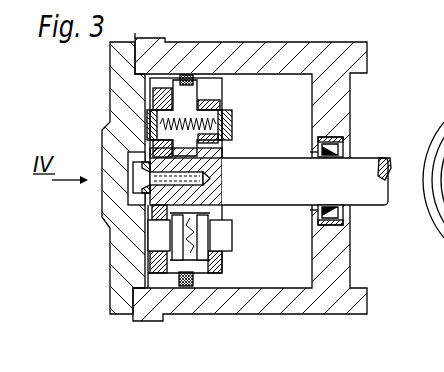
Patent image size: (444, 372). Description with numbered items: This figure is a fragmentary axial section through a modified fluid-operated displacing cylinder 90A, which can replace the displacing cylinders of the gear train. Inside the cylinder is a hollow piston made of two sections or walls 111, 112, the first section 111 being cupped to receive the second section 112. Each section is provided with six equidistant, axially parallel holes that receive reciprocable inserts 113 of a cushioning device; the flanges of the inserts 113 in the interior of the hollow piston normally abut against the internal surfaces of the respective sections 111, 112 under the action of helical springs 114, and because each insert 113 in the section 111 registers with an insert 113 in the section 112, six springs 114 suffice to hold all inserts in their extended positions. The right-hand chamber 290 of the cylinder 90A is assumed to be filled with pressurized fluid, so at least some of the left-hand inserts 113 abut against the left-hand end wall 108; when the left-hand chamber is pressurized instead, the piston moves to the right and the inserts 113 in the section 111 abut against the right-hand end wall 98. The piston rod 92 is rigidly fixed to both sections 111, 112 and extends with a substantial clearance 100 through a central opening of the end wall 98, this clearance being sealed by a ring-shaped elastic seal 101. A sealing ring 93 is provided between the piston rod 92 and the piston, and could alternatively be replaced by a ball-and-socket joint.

The fluid-operated displacing cylinder 90A is at (252, 62).
The right-hand chamber 290 is at (297, 93).
The section of the hollow piston 111 is at (280, 86).
The helical spring 114 is at (230, 125).
The reciprocable insert 113 is at (212, 139).
The section of the hollow piston 112 is at (147, 101).
The left-hand end wall 108 is at (128, 281).
The right-hand end wall 98 is at (329, 266).
The clearance 100 is at (348, 157).
The ring-shaped elastic seal 101 is at (345, 221).
The sealing ring 93 is at (190, 287).
The piston rod 92 is at (266, 188).